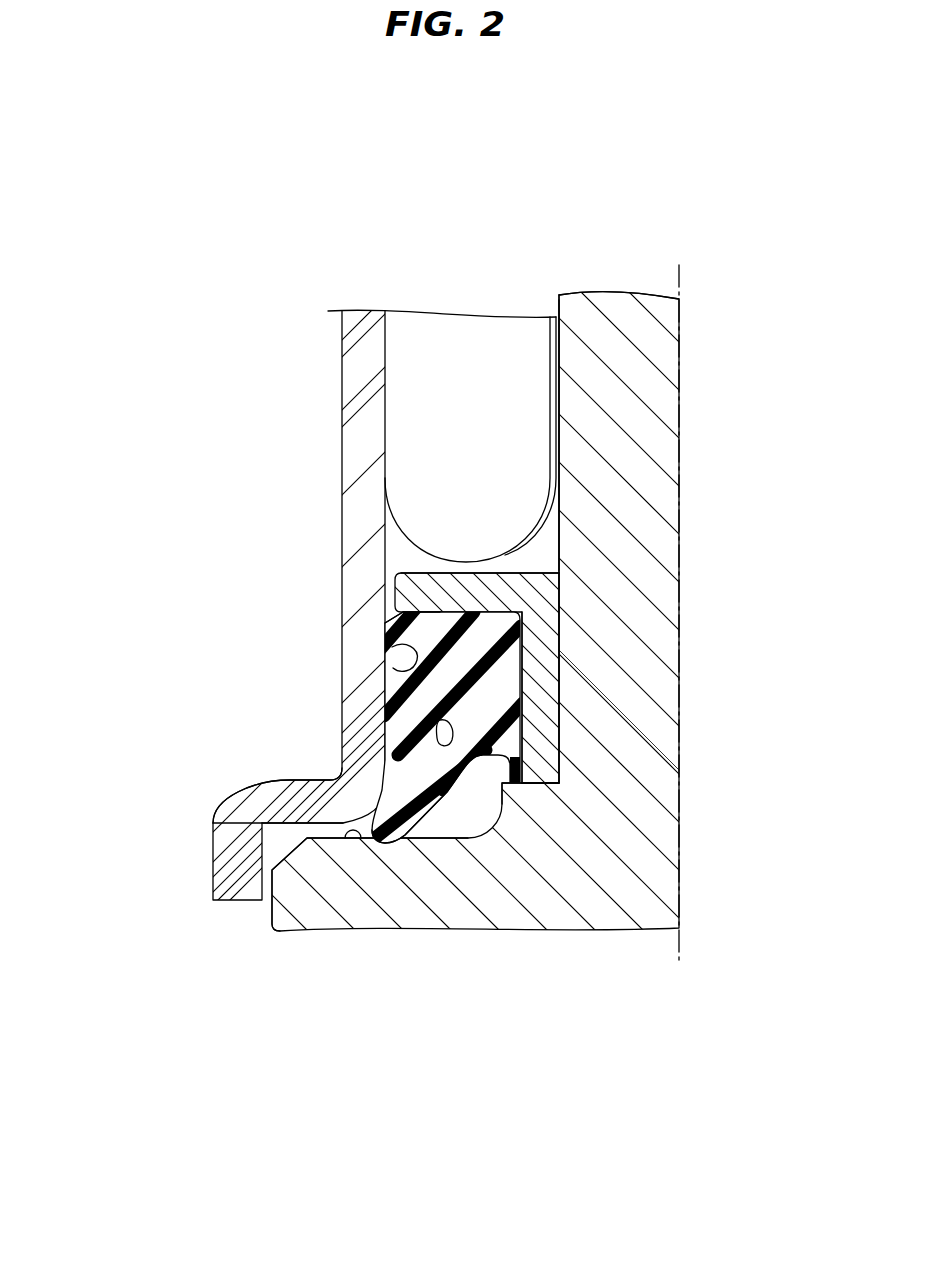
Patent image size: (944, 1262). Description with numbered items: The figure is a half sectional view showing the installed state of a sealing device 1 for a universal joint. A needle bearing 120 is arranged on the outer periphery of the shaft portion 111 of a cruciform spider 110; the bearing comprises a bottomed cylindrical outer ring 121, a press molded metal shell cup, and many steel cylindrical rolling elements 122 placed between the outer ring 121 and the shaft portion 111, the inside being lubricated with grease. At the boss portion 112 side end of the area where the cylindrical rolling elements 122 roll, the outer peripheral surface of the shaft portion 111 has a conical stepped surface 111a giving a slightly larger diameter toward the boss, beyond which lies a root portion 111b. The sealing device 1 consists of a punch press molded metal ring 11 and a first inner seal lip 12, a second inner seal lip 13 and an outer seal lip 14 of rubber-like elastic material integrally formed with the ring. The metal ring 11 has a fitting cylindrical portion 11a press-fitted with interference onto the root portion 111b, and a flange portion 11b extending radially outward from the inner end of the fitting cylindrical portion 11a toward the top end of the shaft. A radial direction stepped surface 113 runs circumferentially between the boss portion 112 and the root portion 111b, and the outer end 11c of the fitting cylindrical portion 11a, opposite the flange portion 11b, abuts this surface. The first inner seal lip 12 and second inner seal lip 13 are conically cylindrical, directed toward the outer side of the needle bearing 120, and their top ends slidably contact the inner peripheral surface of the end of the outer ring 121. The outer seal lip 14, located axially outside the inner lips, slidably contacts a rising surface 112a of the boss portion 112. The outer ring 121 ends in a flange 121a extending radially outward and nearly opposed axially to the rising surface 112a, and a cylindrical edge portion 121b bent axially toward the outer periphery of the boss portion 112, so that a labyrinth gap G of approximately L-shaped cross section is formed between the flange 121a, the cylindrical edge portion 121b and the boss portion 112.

The sealing device 1 is at (565, 622).
The metal ring 11 is at (545, 662).
The fitting cylindrical portion 11a is at (540, 727).
The flange portion 11b is at (445, 585).
The outer end 11c is at (523, 785).
The first inner seal lip 12 is at (387, 658).
The second inner seal lip 13 is at (400, 727).
The outer seal lip 14 is at (413, 818).
The cruciform spider 110 is at (390, 932).
The shaft portion 111 is at (653, 438).
The conical stepped surface 111a is at (553, 533).
The root portion 111b is at (613, 693).
The boss portion 112 is at (307, 910).
The rising surface 112a is at (350, 842).
The radial direction stepped surface 113 is at (565, 765).
The needle bearing 120 is at (433, 300).
The outer ring 121 is at (363, 435).
The flange 121a is at (293, 787).
The cylindrical edge portion 121b is at (223, 862).
The cylindrical rolling elements 122 is at (420, 375).
The labyrinth gap G is at (280, 843).